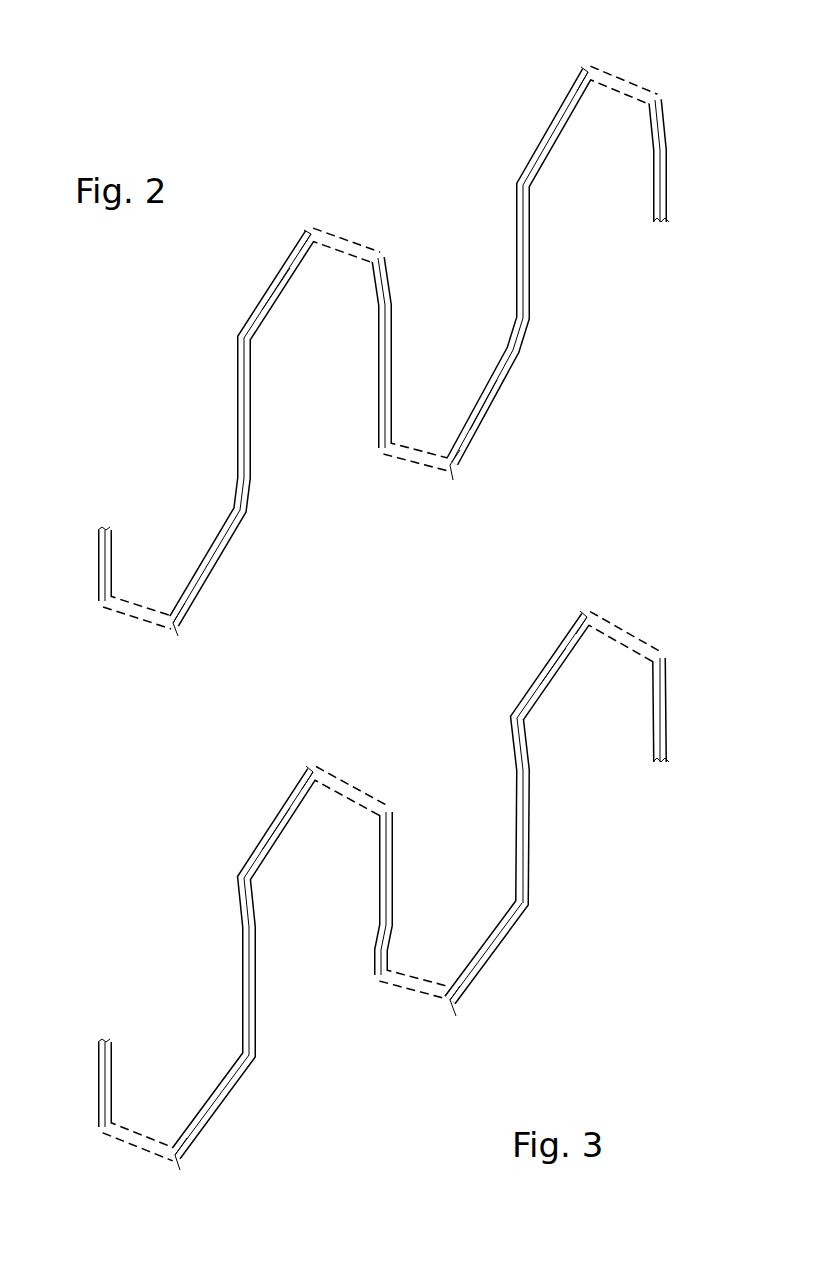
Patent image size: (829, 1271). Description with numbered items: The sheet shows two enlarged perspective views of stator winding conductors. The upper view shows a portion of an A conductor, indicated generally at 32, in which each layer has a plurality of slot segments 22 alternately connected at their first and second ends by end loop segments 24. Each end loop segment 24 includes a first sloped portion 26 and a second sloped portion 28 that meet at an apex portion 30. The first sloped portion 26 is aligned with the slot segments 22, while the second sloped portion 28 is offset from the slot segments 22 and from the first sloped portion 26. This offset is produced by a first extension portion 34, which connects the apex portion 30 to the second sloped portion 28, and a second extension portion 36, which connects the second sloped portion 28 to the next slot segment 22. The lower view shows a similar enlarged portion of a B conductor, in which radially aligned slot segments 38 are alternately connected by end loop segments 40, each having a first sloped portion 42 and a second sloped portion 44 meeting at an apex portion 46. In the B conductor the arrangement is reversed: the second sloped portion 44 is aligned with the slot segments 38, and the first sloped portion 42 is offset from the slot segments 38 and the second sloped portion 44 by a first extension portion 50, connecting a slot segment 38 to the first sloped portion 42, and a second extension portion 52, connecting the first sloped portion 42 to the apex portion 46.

In FIG. 2, the slot segment 22 is at (105, 555).
In FIG. 2, the end loop segment 24 is at (292, 312).
In FIG. 2, the first sloped portion 26 is at (278, 290).
In FIG. 2, the second sloped portion 28 is at (352, 243).
In FIG. 2, the apex portion 30 is at (305, 230).
In FIG. 2, the portion of one layer of a magazine of A conductors 32 is at (152, 392).
In FIG. 2, the first extension portion 34 is at (305, 240).
In FIG. 2, the second extension portion 36 is at (388, 292).
In FIG. 3, the slot segment 38 is at (103, 1092).
In FIG. 3, the end loop segment 40 is at (288, 848).
In FIG. 3, the first sloped portion 42 is at (273, 826).
In FIG. 3, the second sloped portion 44 is at (352, 792).
In FIG. 3, the apex portion 46 is at (308, 768).
In FIG. 3, the first extension portion 50 is at (240, 908).
In FIG. 3, the second extension portion 52 is at (308, 780).